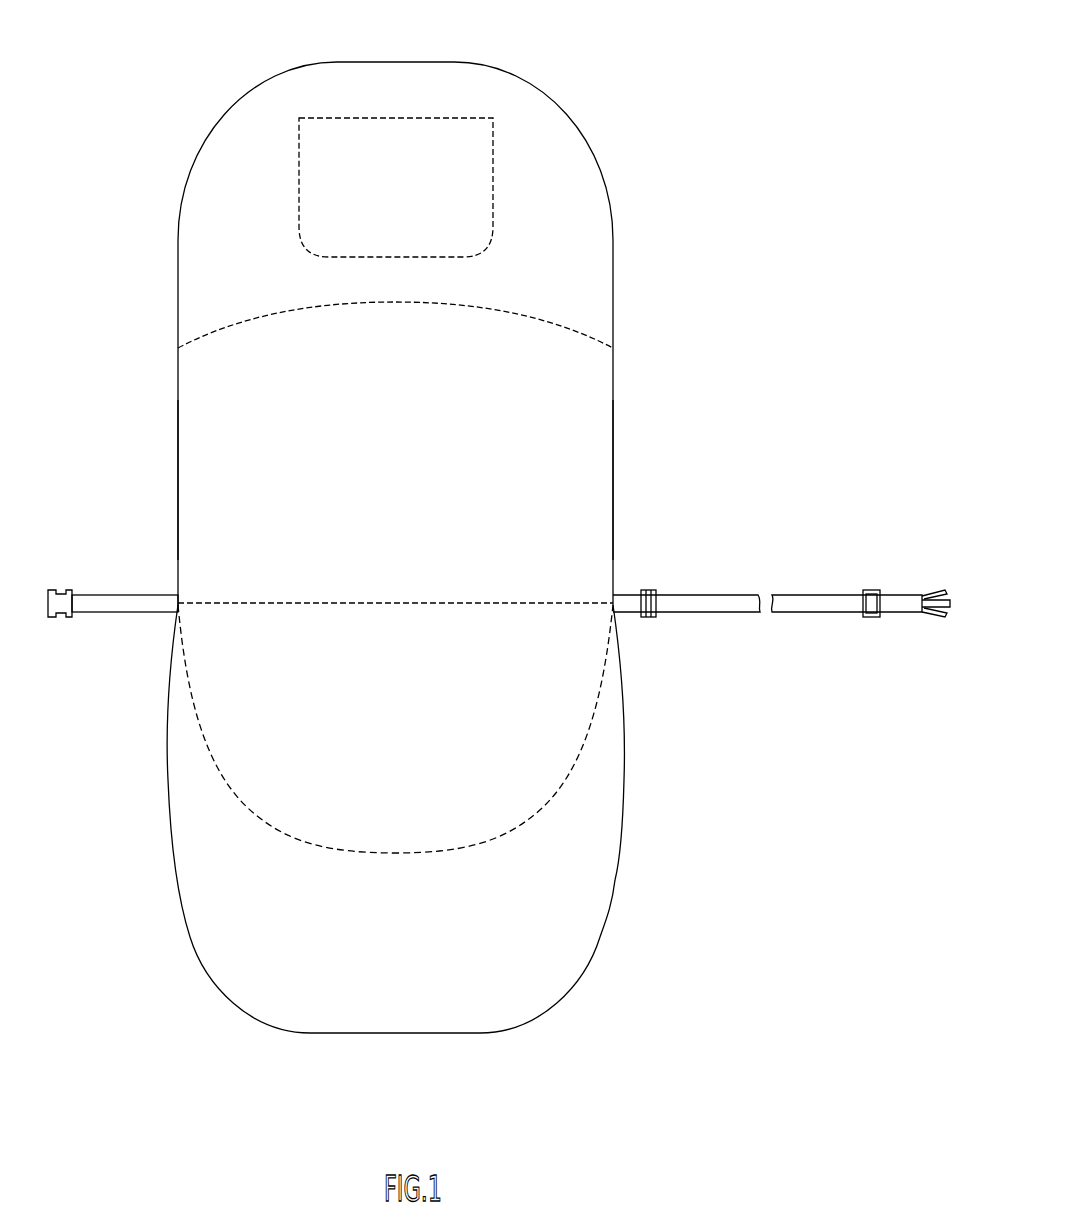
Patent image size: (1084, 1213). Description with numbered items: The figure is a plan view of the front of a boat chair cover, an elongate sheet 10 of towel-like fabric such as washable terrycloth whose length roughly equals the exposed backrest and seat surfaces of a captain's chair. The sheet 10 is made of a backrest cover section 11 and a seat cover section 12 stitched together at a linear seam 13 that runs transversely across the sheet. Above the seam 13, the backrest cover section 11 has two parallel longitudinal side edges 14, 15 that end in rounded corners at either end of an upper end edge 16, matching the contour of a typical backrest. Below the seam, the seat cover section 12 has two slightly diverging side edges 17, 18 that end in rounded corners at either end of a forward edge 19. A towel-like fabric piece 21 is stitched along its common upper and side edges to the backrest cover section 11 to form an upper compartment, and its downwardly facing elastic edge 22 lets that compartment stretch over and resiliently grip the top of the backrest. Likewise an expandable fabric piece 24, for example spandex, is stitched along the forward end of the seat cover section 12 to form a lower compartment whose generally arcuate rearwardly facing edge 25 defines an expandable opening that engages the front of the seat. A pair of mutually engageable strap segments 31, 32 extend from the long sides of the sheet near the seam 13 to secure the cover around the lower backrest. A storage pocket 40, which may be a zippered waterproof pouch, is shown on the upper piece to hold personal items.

The elongate sheet 10 is at (680, 287).
The backrest cover section 11 is at (384, 480).
The seat cover section 12 is at (384, 737).
The seam 13 is at (200, 263).
The side edge 14 is at (613, 527).
The side edge 15 is at (178, 496).
The upper end edge 16 is at (483, 64).
The side edge 17 is at (625, 752).
The side edge 18 is at (168, 723).
The forward edge 19 is at (558, 1000).
The towel-like fabric piece 21 is at (587, 240).
The elastic edge 22 is at (598, 335).
The expandable fabric piece 24 is at (585, 865).
The rearwardly facing edge 25 is at (220, 763).
The strap segment 31 is at (116, 596).
The strap segment 32 is at (845, 594).
The storage pocket 40 is at (483, 218).